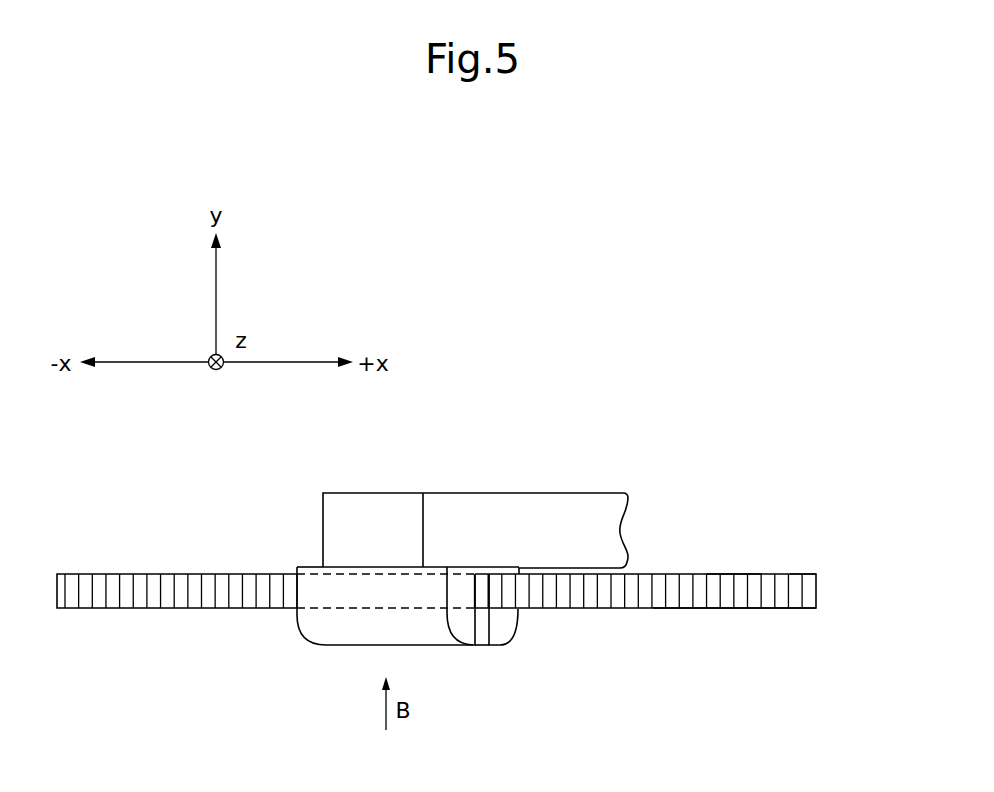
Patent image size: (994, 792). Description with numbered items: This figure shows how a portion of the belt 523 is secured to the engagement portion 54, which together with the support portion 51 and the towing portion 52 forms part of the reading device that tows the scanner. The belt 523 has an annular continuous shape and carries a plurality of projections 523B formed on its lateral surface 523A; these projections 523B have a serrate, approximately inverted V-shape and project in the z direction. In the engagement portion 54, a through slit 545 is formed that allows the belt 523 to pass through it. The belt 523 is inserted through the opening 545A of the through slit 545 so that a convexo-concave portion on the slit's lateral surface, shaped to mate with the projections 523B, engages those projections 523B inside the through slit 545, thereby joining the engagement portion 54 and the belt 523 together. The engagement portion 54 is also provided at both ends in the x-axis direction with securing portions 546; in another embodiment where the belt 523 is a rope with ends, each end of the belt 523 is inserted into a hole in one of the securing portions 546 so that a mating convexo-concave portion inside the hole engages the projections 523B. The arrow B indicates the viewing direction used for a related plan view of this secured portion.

The support portion 51 is at (366, 511).
The towing portion 52 is at (656, 552).
The engagement portion 54 is at (333, 636).
The through slit 545 is at (492, 620).
The opening 545A is at (482, 645).
The securing portion 546 is at (483, 580).
The belt 523 is at (690, 620).
The lateral surface 523A is at (793, 588).
The projections 523B is at (762, 592).